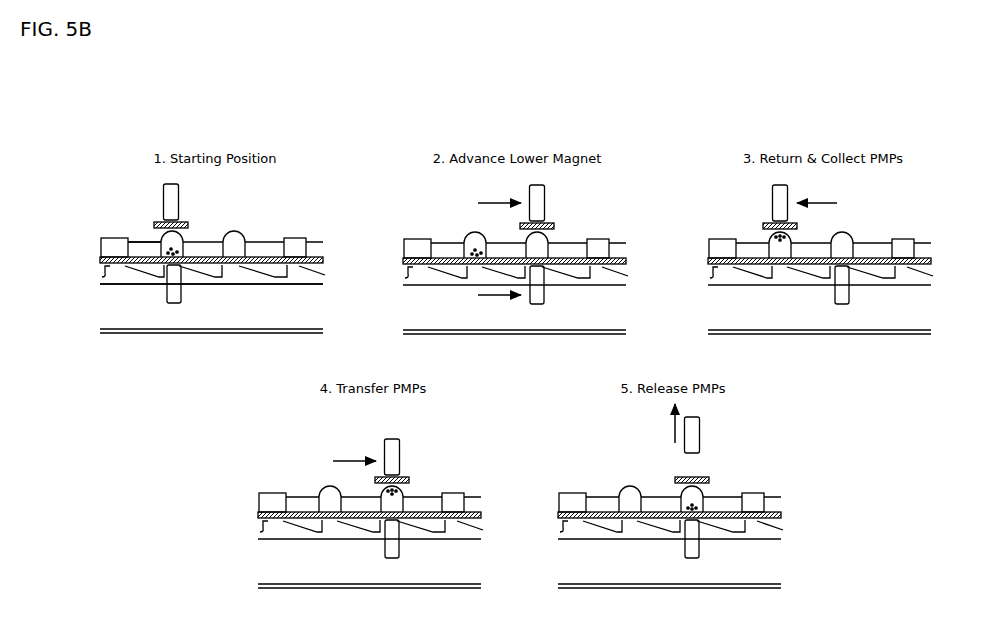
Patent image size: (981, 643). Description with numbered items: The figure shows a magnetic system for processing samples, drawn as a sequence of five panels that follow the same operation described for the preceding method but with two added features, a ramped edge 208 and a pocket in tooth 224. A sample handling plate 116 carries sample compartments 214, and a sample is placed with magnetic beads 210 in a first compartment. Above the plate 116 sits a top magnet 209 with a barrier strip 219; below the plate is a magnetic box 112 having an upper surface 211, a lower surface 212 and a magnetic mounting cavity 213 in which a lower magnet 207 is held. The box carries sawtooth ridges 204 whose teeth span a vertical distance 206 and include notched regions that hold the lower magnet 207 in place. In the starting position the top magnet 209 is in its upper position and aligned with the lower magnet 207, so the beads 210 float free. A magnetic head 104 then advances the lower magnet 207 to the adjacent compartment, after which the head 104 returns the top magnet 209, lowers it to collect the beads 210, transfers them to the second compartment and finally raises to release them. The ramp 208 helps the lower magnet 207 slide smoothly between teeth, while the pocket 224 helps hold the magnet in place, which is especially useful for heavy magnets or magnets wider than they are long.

The magnetic head 104 is at (129, 207).
The plate 116 is at (78, 252).
The magnetic box 112 is at (78, 308).
The barrier strip 219 is at (151, 227).
The top magnet 209 is at (171, 197).
The beads 210 is at (174, 239).
The sample compartments 214 is at (234, 240).
The upper surface 211 is at (322, 266).
The magnetic mounting cavity 213 is at (309, 302).
The lower surface 212 is at (320, 326).
The ramped edge 208 is at (131, 276).
The sawtooth ridges 204 is at (151, 281).
The lower magnet 207 is at (174, 296).
The vertical distance 206 is at (207, 276).
The pocket in tooth 224 is at (224, 276).